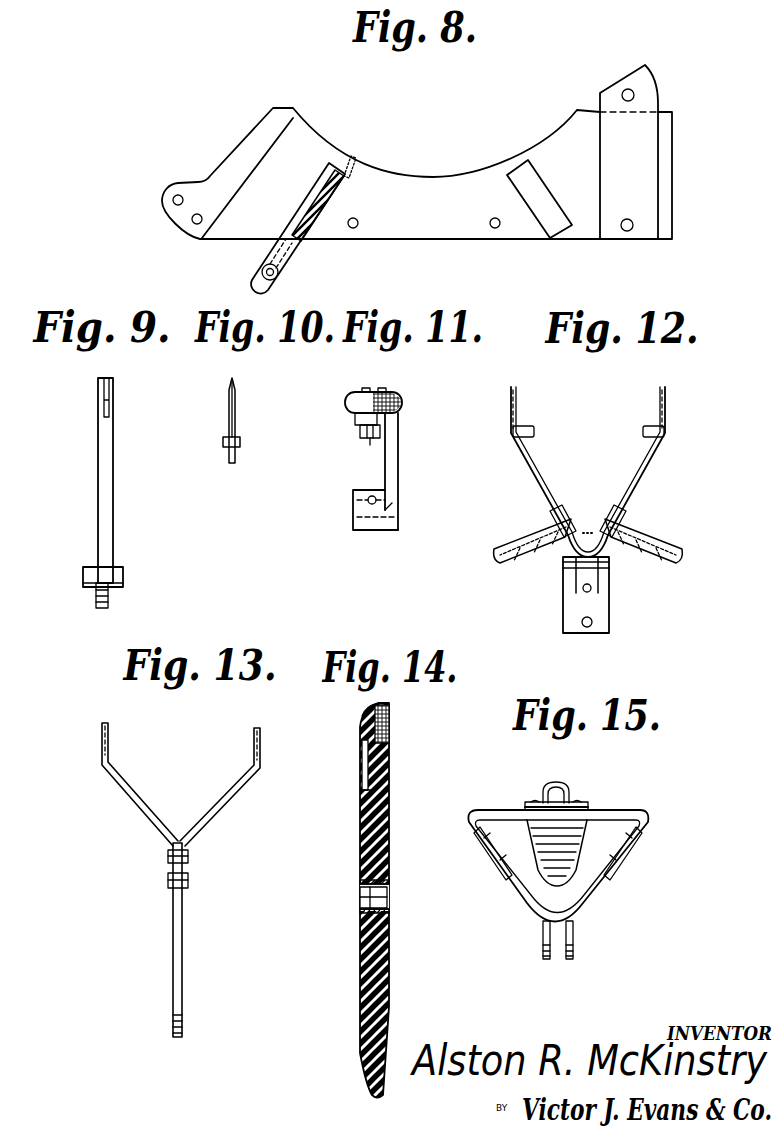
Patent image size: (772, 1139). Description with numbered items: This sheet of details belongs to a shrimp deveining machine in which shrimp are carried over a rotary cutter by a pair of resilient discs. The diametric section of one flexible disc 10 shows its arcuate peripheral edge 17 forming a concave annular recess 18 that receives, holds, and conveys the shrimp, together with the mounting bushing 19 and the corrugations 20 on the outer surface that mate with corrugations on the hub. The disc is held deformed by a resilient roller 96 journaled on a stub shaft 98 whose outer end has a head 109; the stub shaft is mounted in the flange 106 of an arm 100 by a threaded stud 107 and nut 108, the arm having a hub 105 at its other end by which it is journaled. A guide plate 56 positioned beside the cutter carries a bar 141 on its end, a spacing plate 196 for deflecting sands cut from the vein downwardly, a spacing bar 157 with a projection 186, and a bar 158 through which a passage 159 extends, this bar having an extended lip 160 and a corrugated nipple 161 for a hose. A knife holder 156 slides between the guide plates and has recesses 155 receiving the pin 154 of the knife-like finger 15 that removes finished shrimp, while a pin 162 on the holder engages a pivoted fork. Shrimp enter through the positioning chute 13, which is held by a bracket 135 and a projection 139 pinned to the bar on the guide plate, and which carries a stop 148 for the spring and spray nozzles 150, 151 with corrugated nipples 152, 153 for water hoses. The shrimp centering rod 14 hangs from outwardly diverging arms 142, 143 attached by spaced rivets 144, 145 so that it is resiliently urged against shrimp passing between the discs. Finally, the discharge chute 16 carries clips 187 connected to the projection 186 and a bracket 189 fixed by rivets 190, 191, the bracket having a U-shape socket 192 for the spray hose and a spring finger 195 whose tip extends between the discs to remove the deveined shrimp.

In FIG. 8, the guide plate 56 is at (420, 238).
In FIG. 8, the bar 141 is at (605, 143).
In FIG. 8, the spacing plate 196 is at (542, 186).
In FIG. 8, the projection 186 is at (167, 190).
In FIG. 8, the spacing bar 157 is at (260, 160).
In FIG. 8, the bar 158 is at (263, 259).
In FIG. 8, the passage 159 is at (335, 194).
In FIG. 8, the extended lip 160 is at (353, 160).
In FIG. 8, the corrugated nipple 161 is at (278, 272).
In FIG. 9, the recess 155 is at (98, 400).
In FIG. 9, the knife holder 156 is at (110, 510).
In FIG. 9, the pin 162 is at (85, 577).
In FIG. 10, the knife-like finger 15 is at (228, 402).
In FIG. 10, the pin 154 is at (223, 443).
In FIG. 11, the head 109 is at (383, 390).
In FIG. 11, the stub shaft 98 is at (347, 399).
In FIG. 11, the roller 96 is at (402, 398).
In FIG. 11, the flange 106 is at (355, 418).
In FIG. 11, the nut 108 is at (362, 432).
In FIG. 11, the threaded stud 107 is at (372, 443).
In FIG. 11, the arm 100 is at (398, 457).
In FIG. 11, the hub 105 is at (372, 530).
In FIG. 12, the stop 148 is at (530, 426).
In FIG. 12, the positioning chute 13 is at (655, 477).
In FIG. 12, the spray nozzle 150 is at (563, 508).
In FIG. 12, the spray nozzle 151 is at (615, 508).
In FIG. 12, the corrugated nipple 152 is at (540, 524).
In FIG. 12, the corrugated nipple 153 is at (657, 541).
In FIG. 12, the projection 139 is at (598, 577).
In FIG. 12, the bracket 135 is at (568, 603).
In FIG. 13, the arm 142 is at (132, 803).
In FIG. 13, the arm 143 is at (227, 808).
In FIG. 13, the rivet 144 is at (190, 857).
In FIG. 13, the rivet 145 is at (167, 880).
In FIG. 13, the shrimp centering rod 14 is at (182, 978).
In FIG. 14, the arcuate peripheral edge 17 is at (364, 716).
In FIG. 14, the concave annular recess 18 is at (389, 733).
In FIG. 14, the flexible disc 10 is at (352, 811).
In FIG. 14, the corrugations 20 is at (360, 858).
In FIG. 14, the mounting bushing 19 is at (389, 905).
In FIG. 15, the U-shape socket 192 is at (545, 793).
In FIG. 15, the bracket 189 is at (609, 812).
In FIG. 15, the spring finger 195 is at (530, 835).
In FIG. 15, the rivet 190 is at (476, 845).
In FIG. 15, the rivet 191 is at (646, 842).
In FIG. 15, the discharge chute 16 is at (600, 890).
In FIG. 15, the clip 187 is at (573, 943).